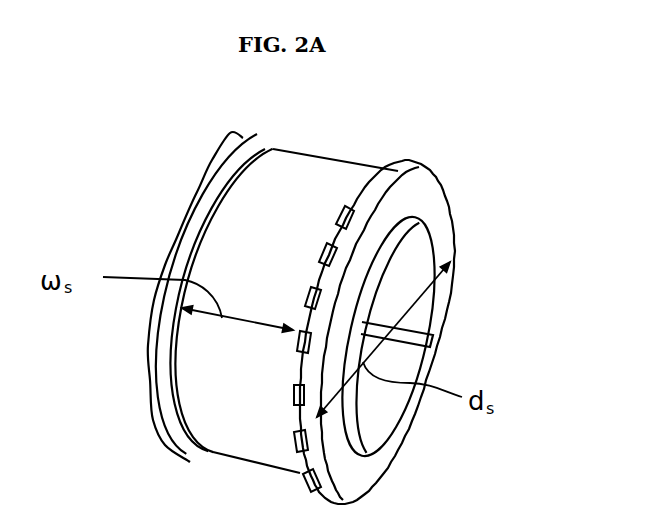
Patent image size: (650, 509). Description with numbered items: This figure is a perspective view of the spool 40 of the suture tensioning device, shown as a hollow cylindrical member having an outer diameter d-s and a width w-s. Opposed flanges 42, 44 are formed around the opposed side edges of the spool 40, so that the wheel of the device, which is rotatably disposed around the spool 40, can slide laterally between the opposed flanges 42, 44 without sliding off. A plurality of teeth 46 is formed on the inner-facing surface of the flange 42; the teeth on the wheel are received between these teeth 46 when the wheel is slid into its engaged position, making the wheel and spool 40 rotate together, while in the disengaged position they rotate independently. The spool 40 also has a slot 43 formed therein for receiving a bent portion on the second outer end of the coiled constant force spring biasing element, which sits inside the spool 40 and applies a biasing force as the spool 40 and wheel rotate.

The spool 40 is at (441, 107).
The flange 42 is at (420, 165).
The slot 43 is at (430, 336).
The flange 44 is at (230, 133).
The teeth 46 is at (349, 207).